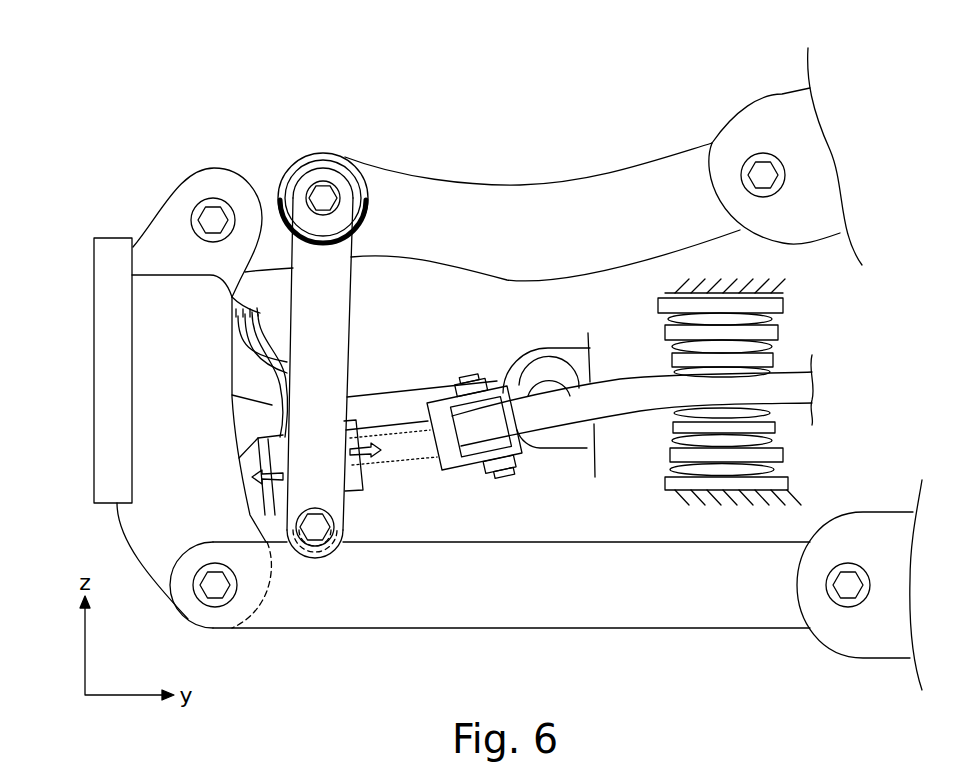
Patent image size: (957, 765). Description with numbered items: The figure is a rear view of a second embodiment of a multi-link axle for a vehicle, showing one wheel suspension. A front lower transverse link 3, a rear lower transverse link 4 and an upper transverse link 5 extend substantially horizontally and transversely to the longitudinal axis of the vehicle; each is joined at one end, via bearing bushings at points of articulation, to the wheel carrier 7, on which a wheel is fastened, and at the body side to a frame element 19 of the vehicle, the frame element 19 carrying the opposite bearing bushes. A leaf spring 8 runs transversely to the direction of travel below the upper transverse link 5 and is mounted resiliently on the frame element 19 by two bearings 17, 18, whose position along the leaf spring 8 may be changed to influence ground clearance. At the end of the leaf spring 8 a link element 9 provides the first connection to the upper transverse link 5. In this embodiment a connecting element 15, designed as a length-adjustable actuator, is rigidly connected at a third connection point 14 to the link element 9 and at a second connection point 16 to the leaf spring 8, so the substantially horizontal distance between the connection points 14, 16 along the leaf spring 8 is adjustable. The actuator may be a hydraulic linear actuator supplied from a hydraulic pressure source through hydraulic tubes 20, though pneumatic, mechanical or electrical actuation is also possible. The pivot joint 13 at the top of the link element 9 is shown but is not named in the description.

The front lower transverse link 3 is at (402, 398).
The rear lower transverse link 4 is at (458, 603).
The upper transverse link 5 is at (558, 207).
The wheel carrier 7 is at (150, 357).
The leaf spring 8 is at (620, 405).
The link element 9 is at (347, 241).
The pivot joint 13 is at (323, 192).
The third connection point 14 is at (317, 535).
The connecting element 15 is at (400, 448).
The second connection point 16 is at (512, 452).
The bearing 17 is at (767, 342).
The bearing 18 is at (773, 450).
The frame element 19 is at (780, 103).
The hydraulic tubes 20 is at (240, 308).